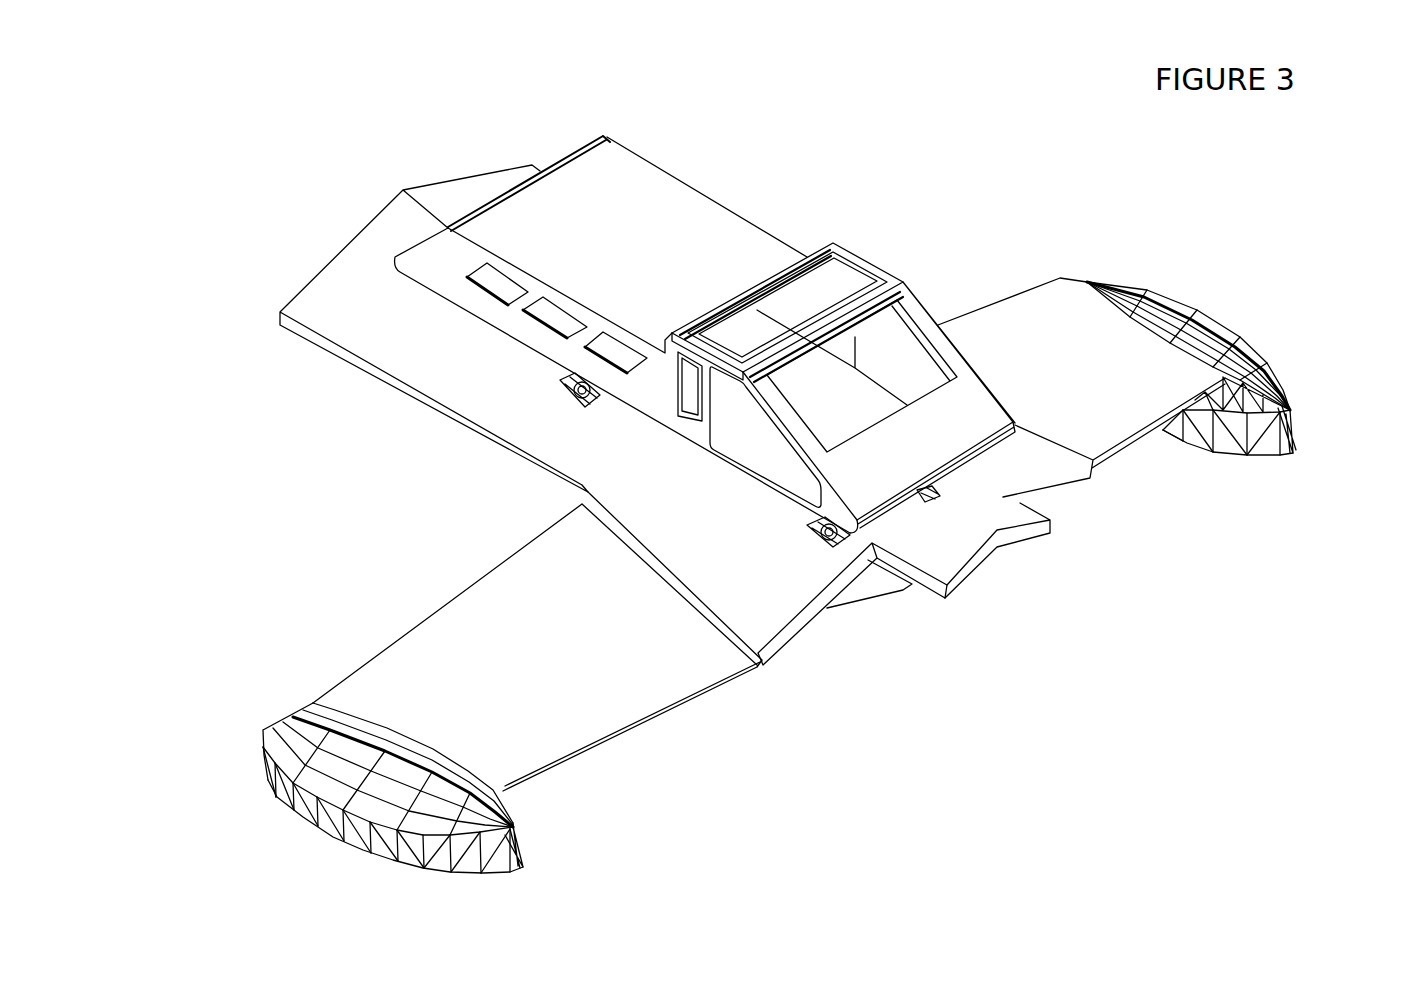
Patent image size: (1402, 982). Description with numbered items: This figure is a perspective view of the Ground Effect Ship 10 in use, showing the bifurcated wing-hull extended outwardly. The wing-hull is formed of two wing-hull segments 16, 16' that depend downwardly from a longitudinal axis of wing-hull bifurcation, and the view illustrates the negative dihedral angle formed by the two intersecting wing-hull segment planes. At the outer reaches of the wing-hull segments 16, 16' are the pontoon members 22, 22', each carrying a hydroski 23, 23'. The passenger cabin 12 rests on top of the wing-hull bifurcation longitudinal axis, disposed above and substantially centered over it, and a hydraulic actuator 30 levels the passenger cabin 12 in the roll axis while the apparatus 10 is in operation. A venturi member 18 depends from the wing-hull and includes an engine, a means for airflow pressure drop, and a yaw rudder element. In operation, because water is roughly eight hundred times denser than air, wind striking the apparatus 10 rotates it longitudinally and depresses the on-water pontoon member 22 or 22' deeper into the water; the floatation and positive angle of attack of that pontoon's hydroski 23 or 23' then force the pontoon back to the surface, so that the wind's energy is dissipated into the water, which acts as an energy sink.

The Ground Effect Ship 10 is at (100, 192).
The passenger cabin 12 is at (703, 187).
The wing-hull segment 16 is at (537, 641).
The wing-hull segment 16' is at (1081, 362).
The venturi member 18 is at (872, 605).
The pontoon member 22 is at (371, 804).
The pontoon member 22' is at (1191, 425).
The hydroski 23 is at (569, 838).
The hydroski 23' is at (1334, 410).
The hydraulic actuator 30 is at (557, 384).